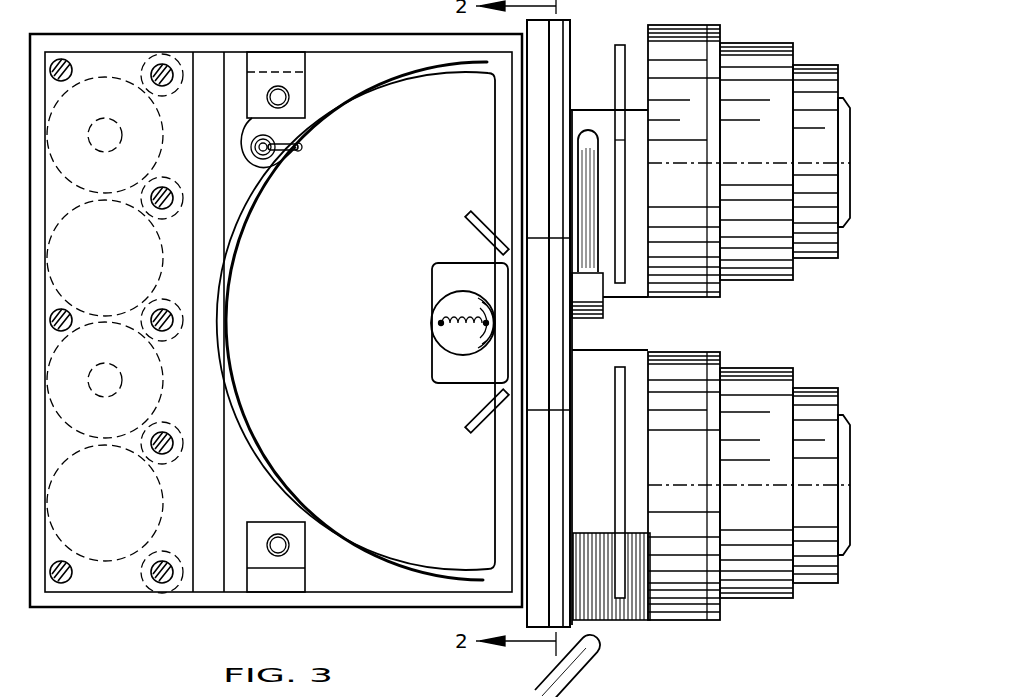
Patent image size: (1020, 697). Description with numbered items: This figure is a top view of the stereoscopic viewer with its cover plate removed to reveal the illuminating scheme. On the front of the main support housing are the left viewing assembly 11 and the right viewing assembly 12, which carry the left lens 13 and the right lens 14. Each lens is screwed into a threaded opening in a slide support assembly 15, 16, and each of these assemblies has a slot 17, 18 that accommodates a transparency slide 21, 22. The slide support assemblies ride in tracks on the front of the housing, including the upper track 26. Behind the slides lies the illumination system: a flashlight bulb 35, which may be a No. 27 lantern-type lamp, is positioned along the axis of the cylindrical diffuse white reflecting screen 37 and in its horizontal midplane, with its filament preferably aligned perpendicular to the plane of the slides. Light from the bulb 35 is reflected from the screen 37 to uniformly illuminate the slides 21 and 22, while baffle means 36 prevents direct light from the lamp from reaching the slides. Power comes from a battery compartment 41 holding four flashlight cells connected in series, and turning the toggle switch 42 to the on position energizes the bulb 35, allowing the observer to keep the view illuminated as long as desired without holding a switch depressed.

The left viewing assembly 11 is at (782, 616).
The right viewing assembly 12 is at (762, 148).
The left lens 13 is at (749, 507).
The right lens 14 is at (840, 78).
The slide support assembly 15 is at (633, 621).
The slide support assembly 16 is at (636, 281).
The slot 17 is at (612, 372).
The slot 18 is at (622, 145).
The transparency slide 21 is at (621, 491).
The transparency slide 22 is at (621, 78).
The upper track 26 is at (555, 43).
The No. 27 lantern-type lamp 27 is at (587, 138).
The flashlight bulb 35 is at (437, 305).
The baffle means 36 is at (506, 365).
The screen 37 is at (238, 352).
The battery compartment 41 is at (126, 612).
The toggle switch 42 is at (302, 146).